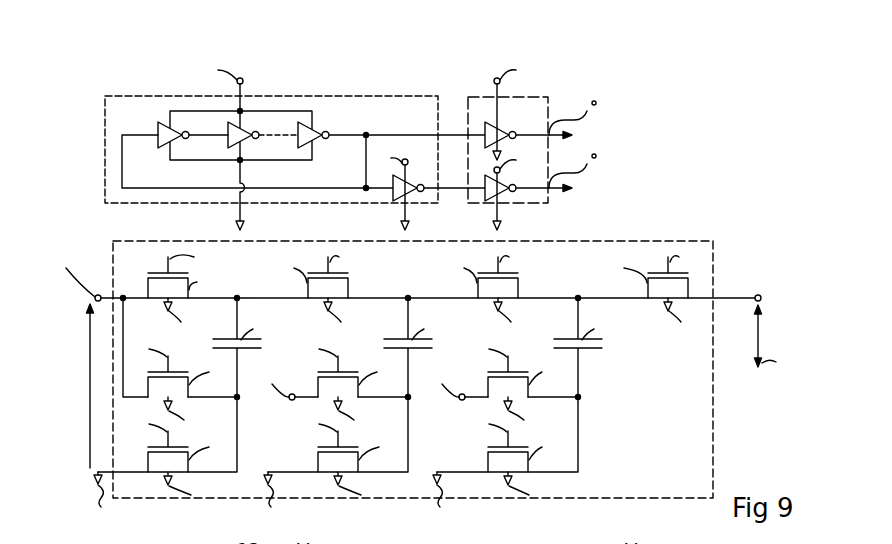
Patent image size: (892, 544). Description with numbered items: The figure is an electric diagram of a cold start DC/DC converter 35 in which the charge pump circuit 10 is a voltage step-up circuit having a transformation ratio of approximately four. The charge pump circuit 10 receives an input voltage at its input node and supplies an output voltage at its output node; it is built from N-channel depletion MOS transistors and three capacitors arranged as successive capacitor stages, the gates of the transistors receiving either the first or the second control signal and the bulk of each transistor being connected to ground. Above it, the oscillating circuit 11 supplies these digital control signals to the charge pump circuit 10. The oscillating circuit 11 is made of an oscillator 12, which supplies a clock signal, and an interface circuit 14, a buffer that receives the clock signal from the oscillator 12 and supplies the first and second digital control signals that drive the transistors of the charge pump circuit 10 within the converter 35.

The charge pump circuit 10 is at (113, 262).
The oscillating circuit 11 is at (104, 96).
The oscillator 12 is at (168, 96).
The interface circuit 14 is at (542, 97).
The converter 35 is at (637, 122).